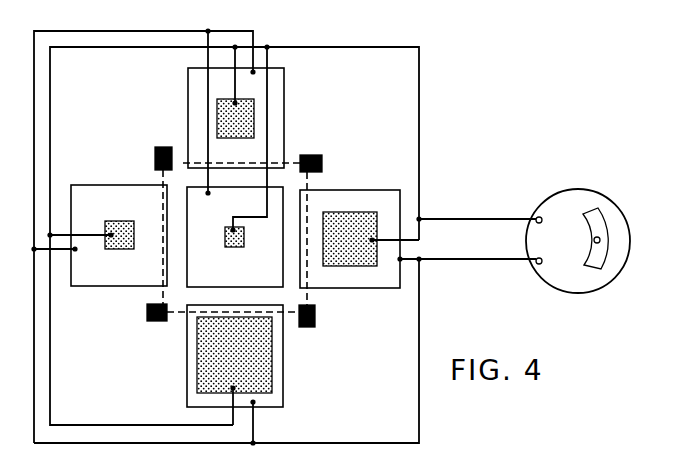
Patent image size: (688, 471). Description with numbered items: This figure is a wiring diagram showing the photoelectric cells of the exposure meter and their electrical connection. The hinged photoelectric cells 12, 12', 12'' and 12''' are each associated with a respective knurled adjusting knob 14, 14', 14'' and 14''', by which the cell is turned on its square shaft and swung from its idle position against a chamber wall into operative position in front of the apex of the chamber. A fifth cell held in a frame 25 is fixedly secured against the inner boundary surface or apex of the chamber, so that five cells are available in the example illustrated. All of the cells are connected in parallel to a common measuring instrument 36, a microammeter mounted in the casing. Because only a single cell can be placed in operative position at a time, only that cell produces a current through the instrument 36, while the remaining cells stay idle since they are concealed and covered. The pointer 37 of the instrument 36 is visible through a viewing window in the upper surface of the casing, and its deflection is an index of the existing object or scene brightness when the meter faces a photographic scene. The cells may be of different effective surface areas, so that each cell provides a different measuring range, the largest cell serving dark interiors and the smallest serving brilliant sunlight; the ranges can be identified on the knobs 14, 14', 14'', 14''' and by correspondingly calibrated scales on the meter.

The photoelectric cell 12 is at (250, 118).
The photoelectric cell 12' is at (251, 356).
The photoelectric cell 12'' is at (119, 235).
The photoelectric cell 12''' is at (350, 239).
The knurled knob 14 is at (323, 152).
The knurled knob 14' is at (139, 310).
The knurled knob 14'' is at (148, 147).
The knurled knob 14''' is at (328, 316).
The frame 25 is at (229, 250).
The measuring instrument 36 is at (615, 208).
The pointer 37 is at (600, 240).